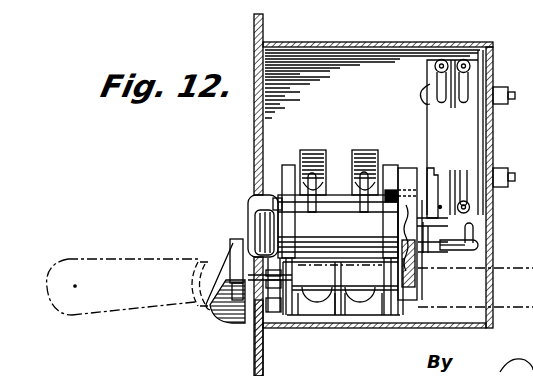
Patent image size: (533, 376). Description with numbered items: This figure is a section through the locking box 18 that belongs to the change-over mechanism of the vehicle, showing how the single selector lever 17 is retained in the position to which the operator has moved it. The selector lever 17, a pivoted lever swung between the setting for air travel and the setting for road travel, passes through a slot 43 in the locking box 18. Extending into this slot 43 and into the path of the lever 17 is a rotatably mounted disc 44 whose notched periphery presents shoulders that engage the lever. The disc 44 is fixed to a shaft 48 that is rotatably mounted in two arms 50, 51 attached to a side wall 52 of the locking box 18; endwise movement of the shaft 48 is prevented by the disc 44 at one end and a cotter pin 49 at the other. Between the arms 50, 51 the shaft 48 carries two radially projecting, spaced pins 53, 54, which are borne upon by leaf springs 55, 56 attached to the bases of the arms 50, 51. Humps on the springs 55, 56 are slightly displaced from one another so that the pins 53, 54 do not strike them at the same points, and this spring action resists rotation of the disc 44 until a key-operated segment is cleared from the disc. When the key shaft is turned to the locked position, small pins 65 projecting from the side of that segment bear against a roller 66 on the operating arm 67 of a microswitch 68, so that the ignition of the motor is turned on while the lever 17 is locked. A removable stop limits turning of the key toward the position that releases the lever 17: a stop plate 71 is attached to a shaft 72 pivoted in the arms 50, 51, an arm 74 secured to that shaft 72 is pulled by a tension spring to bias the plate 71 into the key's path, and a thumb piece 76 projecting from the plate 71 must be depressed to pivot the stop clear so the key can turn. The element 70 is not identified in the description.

The selector lever 17 is at (135, 272).
The locking box 18 is at (313, 42).
The slot 43 is at (257, 316).
The disc 44 is at (402, 168).
The shaft 48 is at (260, 207).
The cotter pin 49 is at (276, 197).
The arm 50 is at (387, 164).
The arm 51 is at (289, 164).
The side wall 52 is at (358, 66).
The pin 53 is at (364, 208).
The pin 54 is at (315, 209).
The leaf spring 55 is at (362, 150).
The leaf spring 56 is at (313, 150).
The pins 65 is at (436, 226).
The roller 66 is at (458, 250).
The operating arm 67 is at (445, 240).
The microswitch 68 is at (465, 143).
The drum 70 is at (392, 210).
The stop plate 71 is at (230, 247).
The shaft 72 is at (224, 323).
The arm 74 is at (276, 314).
The thumb piece 76 is at (213, 312).